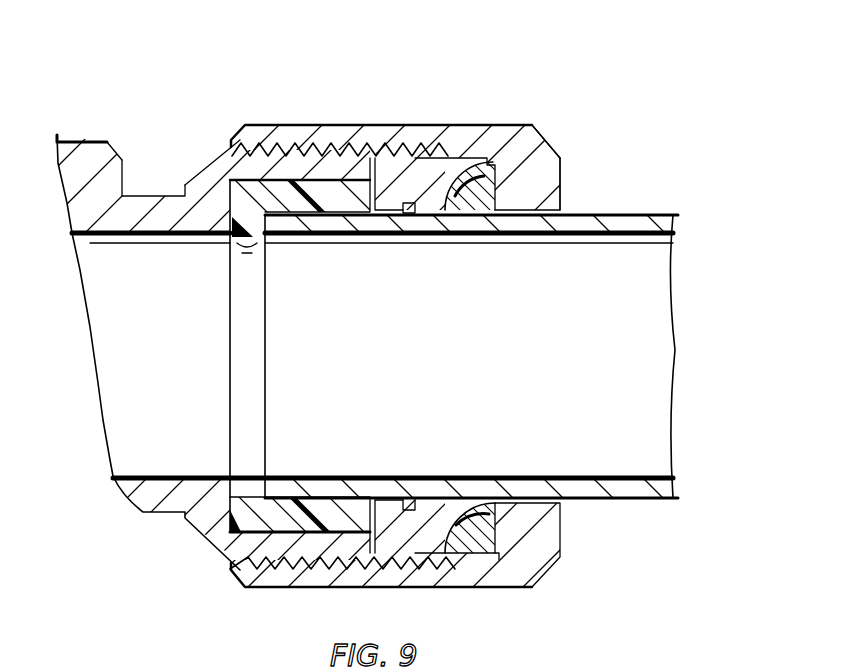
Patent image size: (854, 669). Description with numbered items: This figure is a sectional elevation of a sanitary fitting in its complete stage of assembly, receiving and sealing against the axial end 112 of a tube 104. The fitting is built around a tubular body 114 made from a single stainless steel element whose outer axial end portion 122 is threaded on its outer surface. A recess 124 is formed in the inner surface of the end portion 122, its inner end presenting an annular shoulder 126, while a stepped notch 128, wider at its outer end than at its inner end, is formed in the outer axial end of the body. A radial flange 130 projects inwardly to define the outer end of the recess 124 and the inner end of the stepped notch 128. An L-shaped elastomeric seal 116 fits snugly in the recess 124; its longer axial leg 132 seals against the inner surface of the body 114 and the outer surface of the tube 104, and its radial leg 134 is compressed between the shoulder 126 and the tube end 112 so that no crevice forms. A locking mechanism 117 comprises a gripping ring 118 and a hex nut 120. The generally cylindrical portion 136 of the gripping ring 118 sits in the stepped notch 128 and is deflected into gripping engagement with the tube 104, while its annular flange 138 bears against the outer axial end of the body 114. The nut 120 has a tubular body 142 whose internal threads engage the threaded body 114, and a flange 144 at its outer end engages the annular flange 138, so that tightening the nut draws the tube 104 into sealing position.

The tube 104 is at (658, 213).
The axial end of the tube 112 is at (198, 525).
The tubular body 114 is at (141, 178).
The elastomeric seal 116 is at (281, 540).
The locking mechanism 117 is at (573, 148).
The gripping ring 118 is at (491, 140).
The hex nut 120 is at (541, 131).
The outer axial end portion 122 is at (233, 160).
The recess 124 is at (275, 186).
The annular shoulder 126 is at (231, 196).
The stepped notch 128 is at (423, 500).
The radial flange 130 is at (403, 498).
The axial leg 132 is at (331, 520).
The radial leg 134 is at (250, 477).
The generally cylindrical portion 136 is at (418, 214).
The annular flange 138 is at (489, 554).
The tubular body of the nut 142 is at (437, 82).
The flange of the nut 144 is at (562, 184).